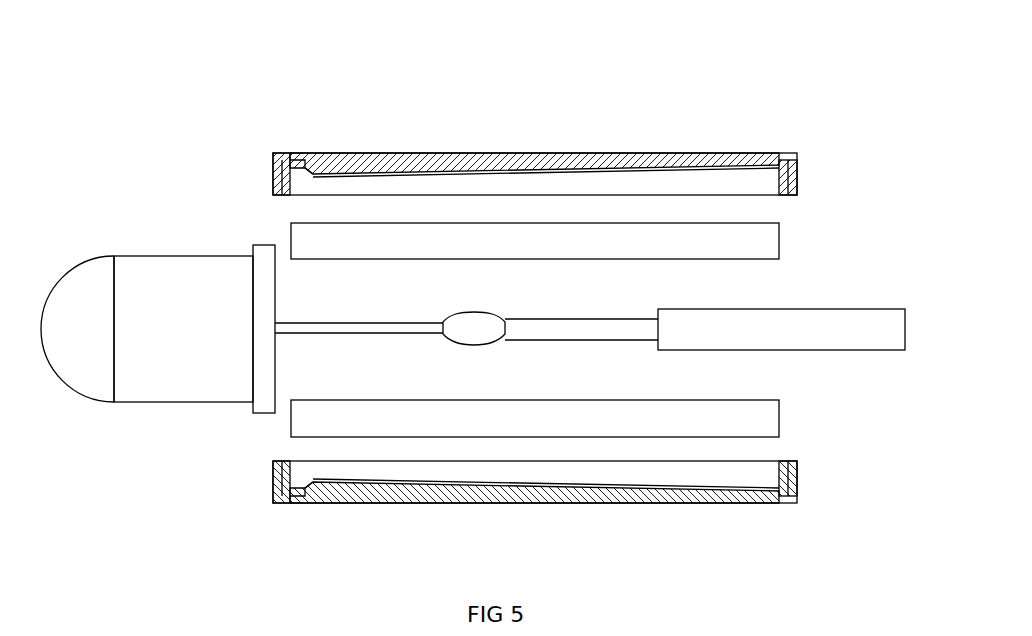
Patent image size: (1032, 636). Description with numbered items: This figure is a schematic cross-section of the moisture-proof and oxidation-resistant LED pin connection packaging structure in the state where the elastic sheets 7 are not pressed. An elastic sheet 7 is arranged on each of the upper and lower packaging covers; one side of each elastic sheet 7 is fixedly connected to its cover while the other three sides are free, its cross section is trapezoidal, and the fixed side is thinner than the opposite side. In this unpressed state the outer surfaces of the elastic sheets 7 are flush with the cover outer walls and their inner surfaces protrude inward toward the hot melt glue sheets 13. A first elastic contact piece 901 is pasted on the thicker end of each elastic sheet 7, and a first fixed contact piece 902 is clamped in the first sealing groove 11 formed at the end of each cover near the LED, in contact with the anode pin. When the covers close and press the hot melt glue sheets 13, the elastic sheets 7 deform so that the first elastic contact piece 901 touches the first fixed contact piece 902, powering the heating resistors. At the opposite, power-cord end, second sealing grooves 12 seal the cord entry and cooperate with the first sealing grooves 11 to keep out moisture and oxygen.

The elastic sheet 7 is at (398, 153).
The first elastic contact piece 901 is at (300, 153).
The first fixed contact piece 902 is at (273, 180).
The first sealing groove 11 is at (275, 503).
The second sealing groove 12 is at (797, 500).
The hot melt glue sheet 13 is at (623, 240).